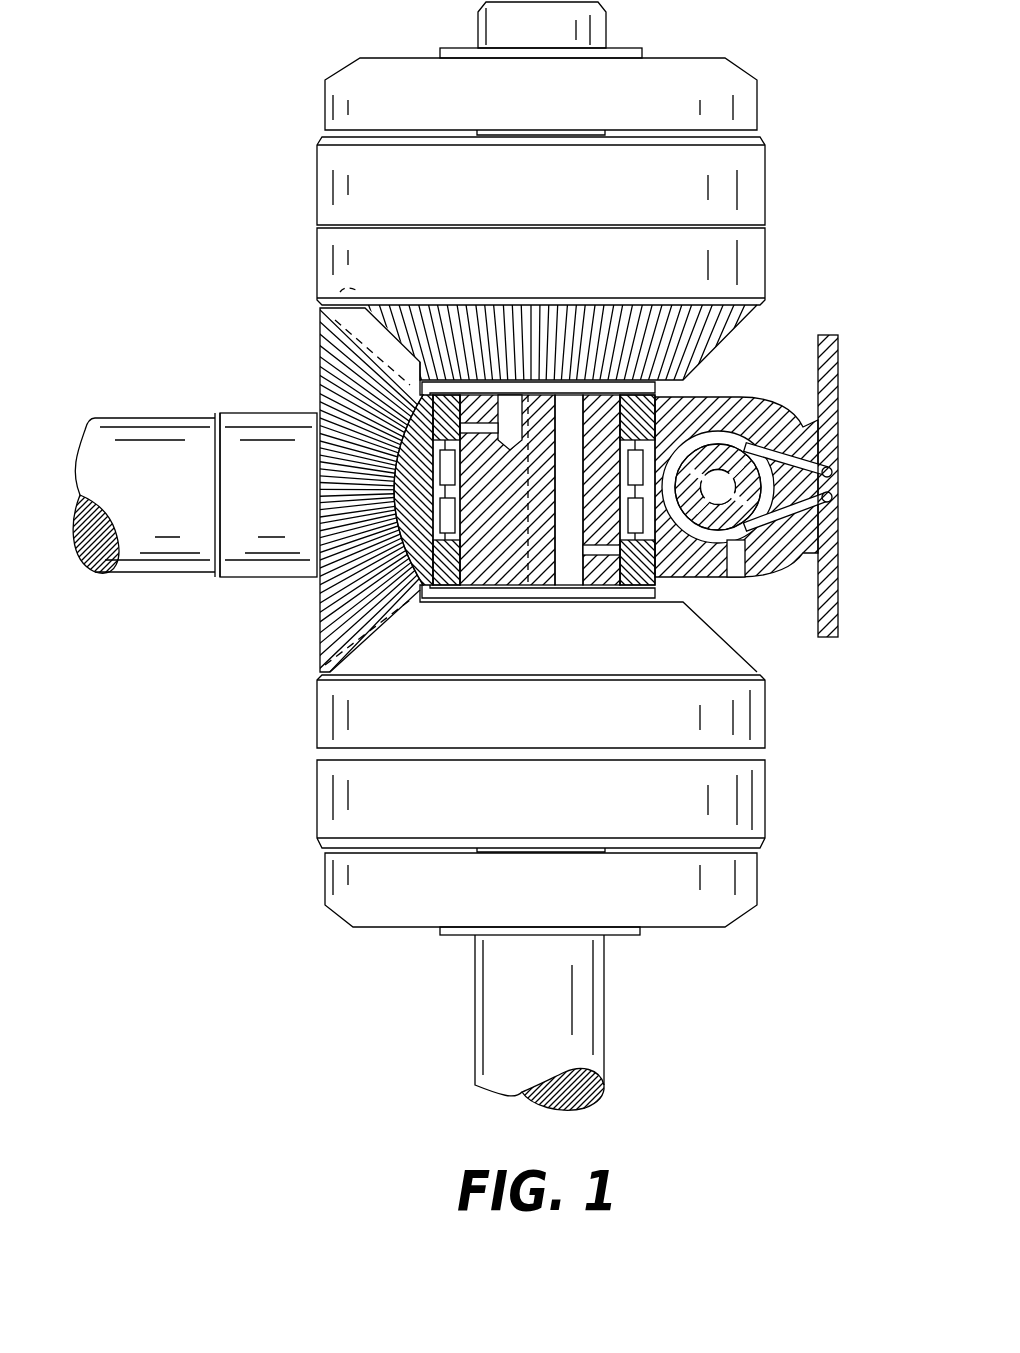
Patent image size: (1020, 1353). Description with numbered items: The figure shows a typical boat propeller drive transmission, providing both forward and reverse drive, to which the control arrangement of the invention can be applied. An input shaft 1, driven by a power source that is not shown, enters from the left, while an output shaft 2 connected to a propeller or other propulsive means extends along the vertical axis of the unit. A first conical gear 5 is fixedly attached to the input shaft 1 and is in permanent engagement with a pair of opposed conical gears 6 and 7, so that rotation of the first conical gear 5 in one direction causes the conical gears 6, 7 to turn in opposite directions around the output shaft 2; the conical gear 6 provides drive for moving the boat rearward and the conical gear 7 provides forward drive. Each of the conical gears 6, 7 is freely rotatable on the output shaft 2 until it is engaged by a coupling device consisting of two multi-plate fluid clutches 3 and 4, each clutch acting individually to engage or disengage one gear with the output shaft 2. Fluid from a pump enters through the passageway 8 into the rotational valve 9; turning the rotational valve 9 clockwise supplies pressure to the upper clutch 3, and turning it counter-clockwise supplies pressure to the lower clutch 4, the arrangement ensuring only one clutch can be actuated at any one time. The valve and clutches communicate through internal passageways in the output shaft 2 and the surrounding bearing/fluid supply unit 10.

The input shaft 1 is at (138, 427).
The output shaft 2 is at (583, 1012).
The multi-plate fluid clutch 3 is at (313, 182).
The multi-plate fluid clutch 4 is at (322, 716).
The first conical gear 5 is at (320, 363).
The conical gear 6 is at (717, 340).
The conical gear 7 is at (750, 660).
The passageway 8 is at (838, 558).
The rotational valve 9 is at (732, 537).
The bearing/fluid supply unit 10 is at (760, 378).